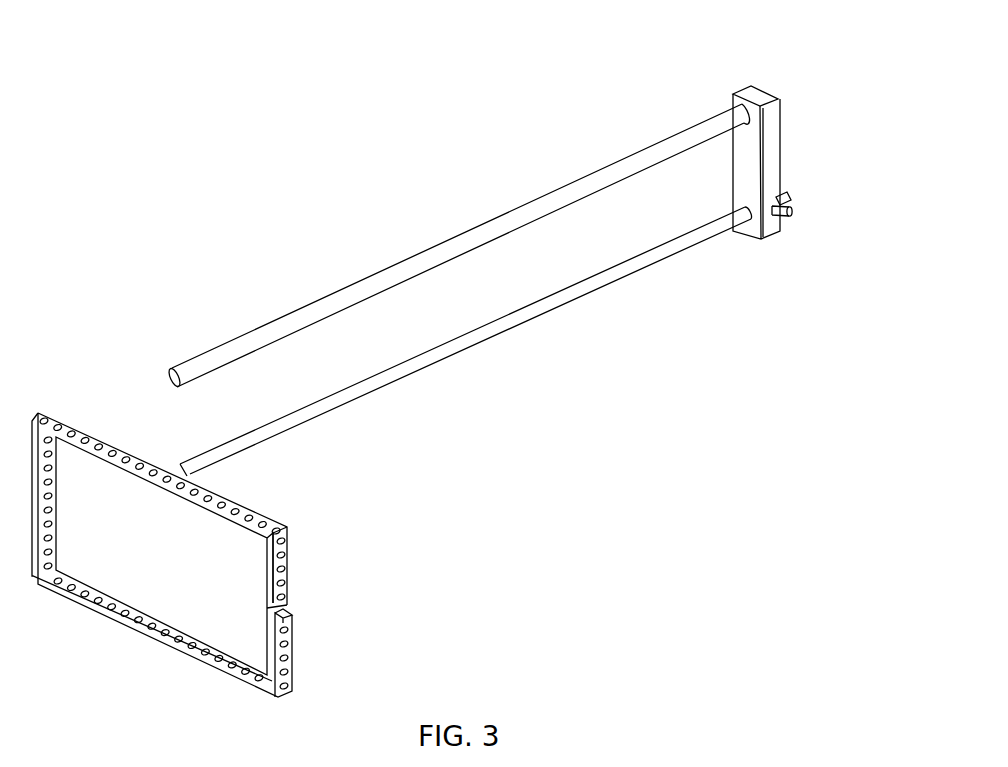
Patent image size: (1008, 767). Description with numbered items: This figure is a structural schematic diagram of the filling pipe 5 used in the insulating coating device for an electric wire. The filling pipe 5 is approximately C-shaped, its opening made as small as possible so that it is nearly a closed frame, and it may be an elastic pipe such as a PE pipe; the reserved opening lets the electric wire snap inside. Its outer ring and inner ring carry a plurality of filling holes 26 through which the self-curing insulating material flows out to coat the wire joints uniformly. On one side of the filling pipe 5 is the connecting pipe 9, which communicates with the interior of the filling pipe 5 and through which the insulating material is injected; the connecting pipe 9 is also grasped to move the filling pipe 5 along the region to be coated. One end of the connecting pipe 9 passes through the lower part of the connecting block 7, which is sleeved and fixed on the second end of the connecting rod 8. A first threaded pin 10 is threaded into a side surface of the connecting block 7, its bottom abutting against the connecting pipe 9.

The filling pipe 5 is at (293, 679).
The filling holes 26 is at (287, 579).
The connecting block 7 is at (772, 107).
The connecting rod 8 is at (560, 198).
The connecting pipe 9 is at (541, 304).
The first threaded pin 10 is at (784, 195).